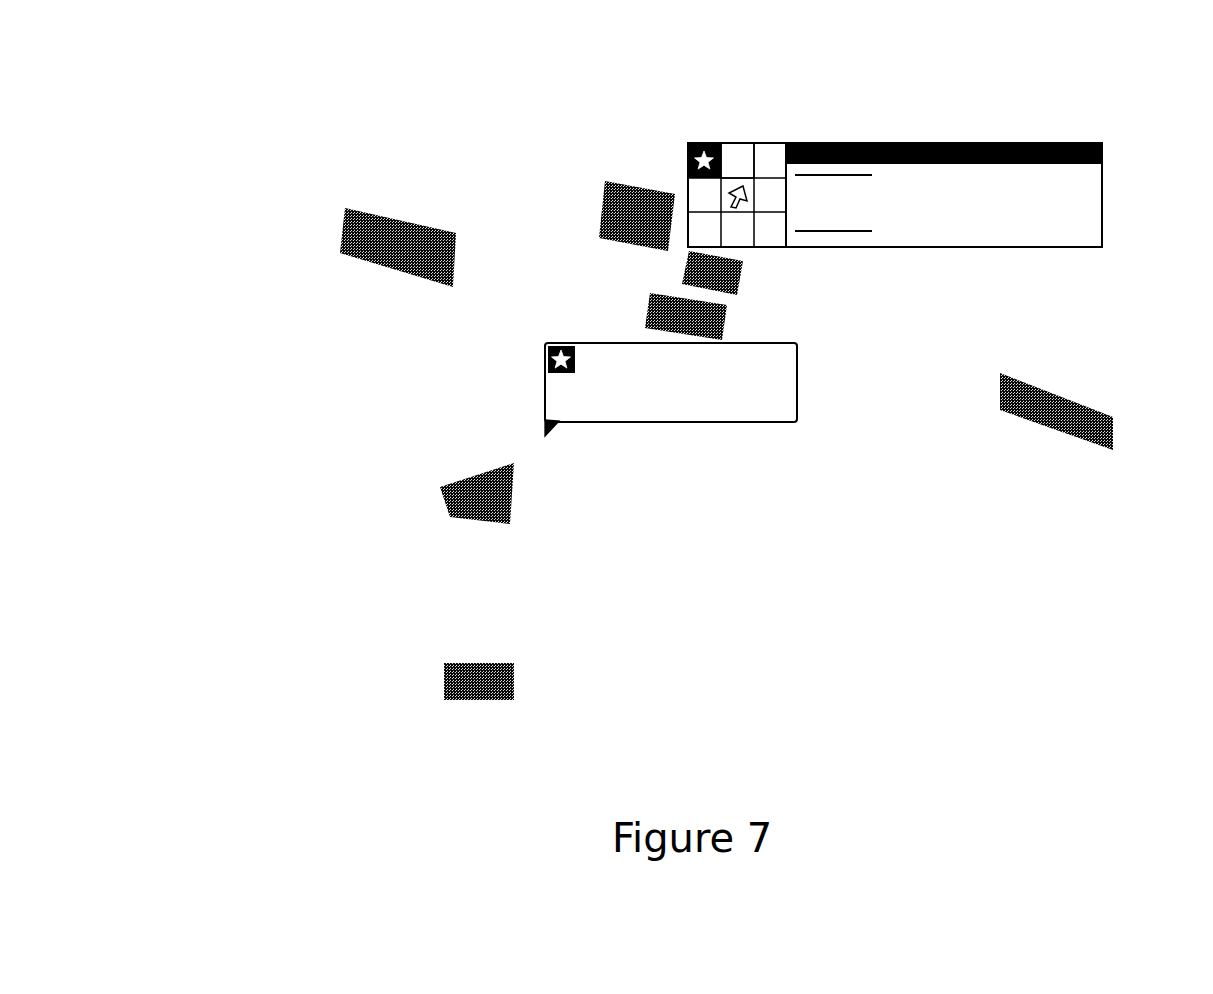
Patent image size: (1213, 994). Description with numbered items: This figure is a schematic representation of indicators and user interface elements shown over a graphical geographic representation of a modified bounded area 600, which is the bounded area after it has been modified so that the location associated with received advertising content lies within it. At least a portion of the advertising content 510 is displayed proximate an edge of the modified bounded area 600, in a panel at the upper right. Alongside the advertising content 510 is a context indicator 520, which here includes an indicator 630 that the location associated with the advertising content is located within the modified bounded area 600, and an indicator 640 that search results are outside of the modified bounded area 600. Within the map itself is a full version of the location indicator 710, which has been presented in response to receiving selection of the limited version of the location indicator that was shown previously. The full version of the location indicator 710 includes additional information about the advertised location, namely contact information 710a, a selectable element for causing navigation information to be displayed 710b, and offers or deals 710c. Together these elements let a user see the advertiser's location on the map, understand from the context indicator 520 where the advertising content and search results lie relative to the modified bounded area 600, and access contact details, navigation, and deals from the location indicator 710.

The modified bounded area 600 is at (318, 114).
The advertising content 510 is at (1101, 190).
The indicator that the advertising content location is within the modified bounded a 630 is at (700, 143).
The context indicator 520 is at (741, 143).
The indicator that search results are outside the modified bounded area 640 is at (739, 192).
The full version of the location indicator 710 is at (512, 275).
The contact information 710a is at (799, 347).
The selectable element for causing navigation information to be displayed 710b is at (799, 364).
The offers or deals 710c is at (799, 385).